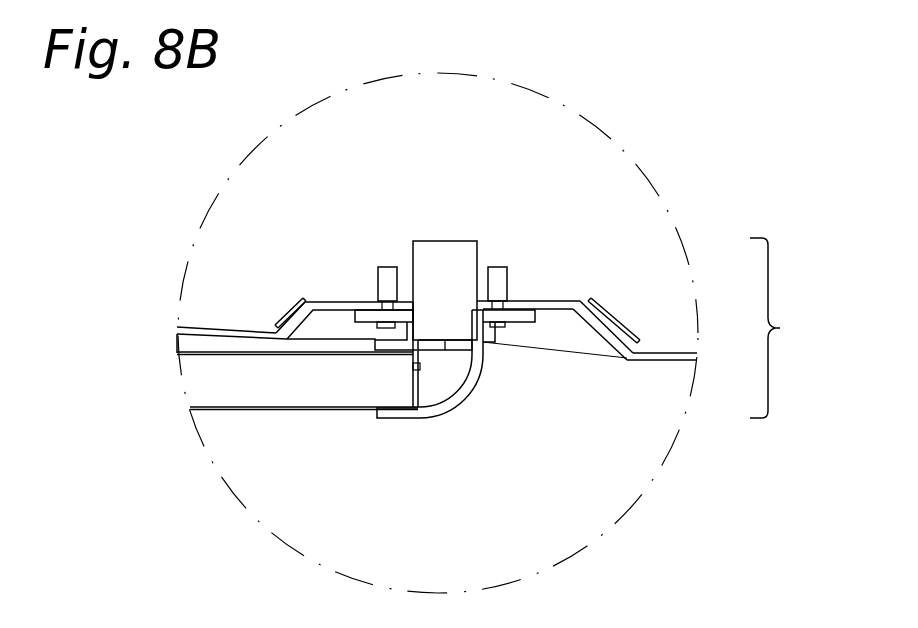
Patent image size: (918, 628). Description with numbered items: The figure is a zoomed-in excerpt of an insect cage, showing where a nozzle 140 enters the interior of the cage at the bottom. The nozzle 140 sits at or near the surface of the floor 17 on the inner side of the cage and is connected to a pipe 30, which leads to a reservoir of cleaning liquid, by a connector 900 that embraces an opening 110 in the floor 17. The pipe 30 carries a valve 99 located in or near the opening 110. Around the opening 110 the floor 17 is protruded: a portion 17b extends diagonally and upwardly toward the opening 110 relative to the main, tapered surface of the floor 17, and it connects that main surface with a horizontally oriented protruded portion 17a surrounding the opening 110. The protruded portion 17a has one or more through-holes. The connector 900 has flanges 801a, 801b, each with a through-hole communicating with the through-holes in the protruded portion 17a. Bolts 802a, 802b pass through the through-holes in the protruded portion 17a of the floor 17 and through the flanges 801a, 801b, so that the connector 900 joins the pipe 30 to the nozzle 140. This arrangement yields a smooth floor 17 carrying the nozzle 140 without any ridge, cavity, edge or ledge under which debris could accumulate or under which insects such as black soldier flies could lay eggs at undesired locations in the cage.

The floor 17 is at (200, 328).
The protruded portion 17a is at (325, 300).
The diagonally extending portion 17b is at (286, 314).
The pipe 30 is at (323, 409).
The valve 99 is at (457, 343).
The opening 110 is at (481, 297).
The nozzle 140 is at (460, 252).
The flange 801a is at (518, 318).
The flange 801b is at (373, 316).
The bolt 802a is at (498, 276).
The bolt 802b is at (388, 268).
The connector 900 is at (780, 328).